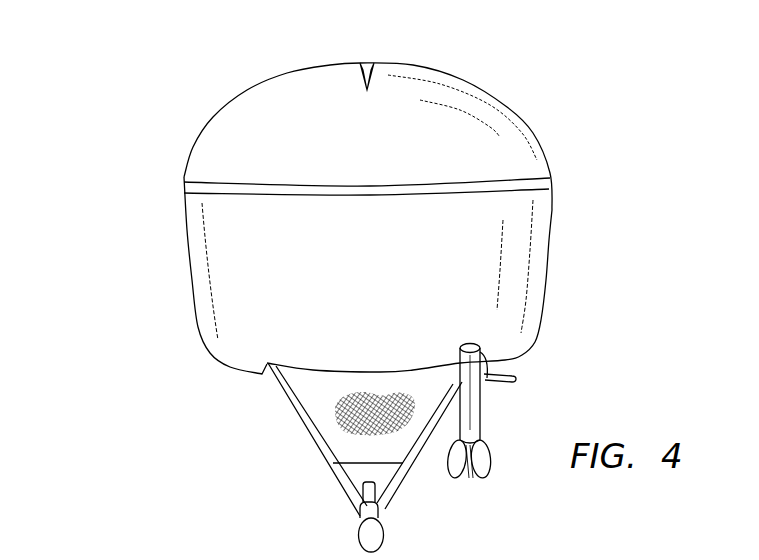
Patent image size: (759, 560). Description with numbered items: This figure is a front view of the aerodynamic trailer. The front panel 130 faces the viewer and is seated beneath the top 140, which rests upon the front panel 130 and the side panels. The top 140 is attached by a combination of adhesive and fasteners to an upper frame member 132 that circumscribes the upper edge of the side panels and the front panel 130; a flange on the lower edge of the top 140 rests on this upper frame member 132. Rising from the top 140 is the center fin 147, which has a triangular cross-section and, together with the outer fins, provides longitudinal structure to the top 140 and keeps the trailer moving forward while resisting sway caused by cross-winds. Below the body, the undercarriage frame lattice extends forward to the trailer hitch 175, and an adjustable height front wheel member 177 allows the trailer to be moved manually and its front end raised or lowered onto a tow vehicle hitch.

The front panel 130 is at (235, 258).
The upper frame member 132 is at (207, 193).
The top 140 is at (238, 135).
The center fin 147 is at (377, 62).
The trailer hitch 175 is at (363, 535).
The adjustable height front wheel member 177 is at (472, 415).